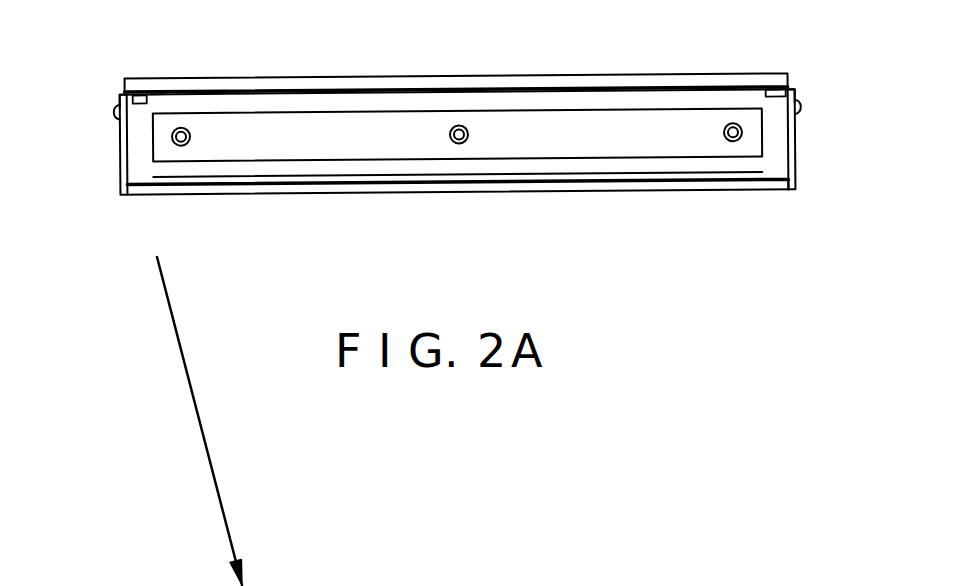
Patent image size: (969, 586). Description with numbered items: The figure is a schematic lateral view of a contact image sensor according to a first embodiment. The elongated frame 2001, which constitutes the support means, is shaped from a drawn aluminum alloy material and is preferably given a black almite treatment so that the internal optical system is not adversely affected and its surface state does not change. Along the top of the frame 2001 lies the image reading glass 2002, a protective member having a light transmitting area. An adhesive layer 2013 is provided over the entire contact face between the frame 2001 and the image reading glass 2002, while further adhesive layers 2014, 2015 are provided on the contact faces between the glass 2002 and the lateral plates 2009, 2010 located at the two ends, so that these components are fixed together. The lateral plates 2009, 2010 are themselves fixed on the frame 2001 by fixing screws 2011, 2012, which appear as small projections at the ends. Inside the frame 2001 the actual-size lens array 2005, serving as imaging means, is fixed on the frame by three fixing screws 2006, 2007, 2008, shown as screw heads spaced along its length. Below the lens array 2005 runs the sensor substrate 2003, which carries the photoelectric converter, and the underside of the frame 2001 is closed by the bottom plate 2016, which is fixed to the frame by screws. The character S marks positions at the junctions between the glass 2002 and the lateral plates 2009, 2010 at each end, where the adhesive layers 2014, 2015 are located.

The frame 2001 is at (778, 158).
The image reading glass 2002 is at (599, 80).
The sensor substrate 2003 is at (585, 178).
The actual-size lens array 2005 is at (342, 152).
The fixing screw 2006 is at (458, 144).
The fixing screw 2007 is at (183, 145).
The fixing screw 2008 is at (731, 142).
The lateral plate 2009 is at (121, 95).
The lateral plate 2010 is at (793, 89).
The fixing screw 2011 is at (113, 107).
The fixing screw 2012 is at (803, 112).
The adhesive layer 2013 is at (456, 88).
The adhesive layer 2014 is at (134, 96).
The adhesive layer 2015 is at (781, 93).
The bottom plate 2016 is at (772, 187).
The gap S is at (165, 98).